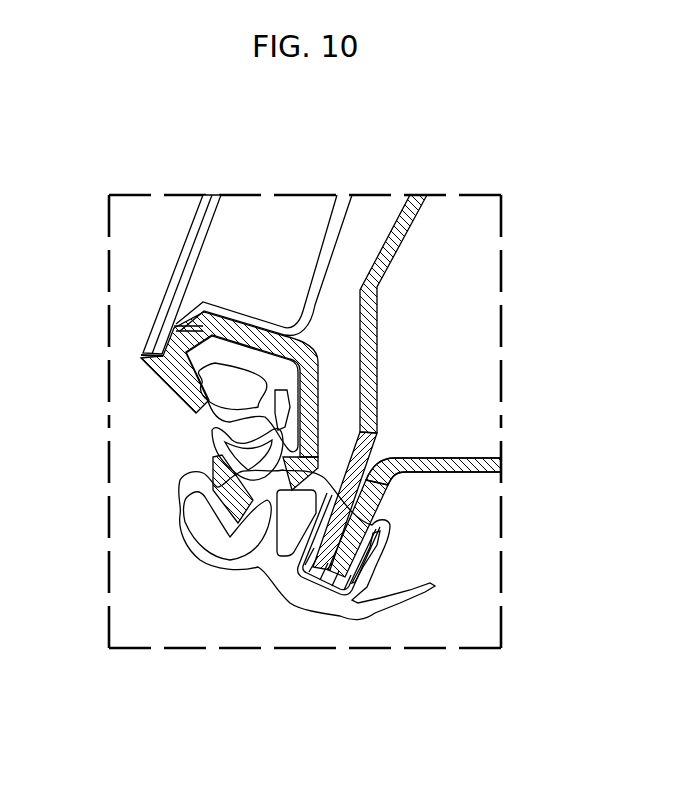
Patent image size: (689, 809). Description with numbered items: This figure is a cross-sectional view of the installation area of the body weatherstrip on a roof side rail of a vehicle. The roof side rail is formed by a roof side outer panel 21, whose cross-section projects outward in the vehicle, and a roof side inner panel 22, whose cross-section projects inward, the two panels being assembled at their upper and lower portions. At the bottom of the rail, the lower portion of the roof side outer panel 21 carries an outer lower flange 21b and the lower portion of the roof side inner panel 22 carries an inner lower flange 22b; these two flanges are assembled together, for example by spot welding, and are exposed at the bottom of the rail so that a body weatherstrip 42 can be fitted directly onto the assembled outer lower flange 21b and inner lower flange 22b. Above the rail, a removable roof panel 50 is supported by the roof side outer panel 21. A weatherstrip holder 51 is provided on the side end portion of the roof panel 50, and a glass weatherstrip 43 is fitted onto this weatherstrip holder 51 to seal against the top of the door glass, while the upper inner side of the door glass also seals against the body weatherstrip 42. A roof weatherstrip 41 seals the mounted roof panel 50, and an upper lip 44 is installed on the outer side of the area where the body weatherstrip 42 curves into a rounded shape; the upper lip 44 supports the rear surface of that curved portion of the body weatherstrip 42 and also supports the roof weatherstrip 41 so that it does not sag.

The roof panel 50 is at (270, 228).
The weatherstrip holder 51 is at (238, 328).
The roof side outer panel 21 is at (388, 225).
The outer lower flange 21b is at (348, 500).
The roof side inner panel 22 is at (477, 465).
The inner lower flange 22b is at (362, 510).
The roof weatherstrip 41 is at (265, 592).
The body weatherstrip 42 is at (303, 598).
The glass weatherstrip 43 is at (193, 397).
The upper lip 44 is at (203, 473).